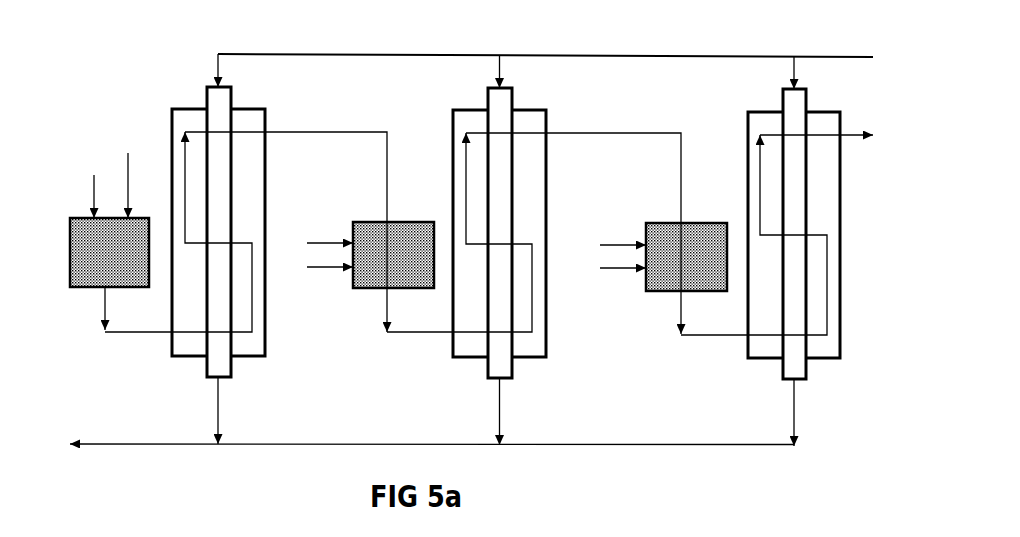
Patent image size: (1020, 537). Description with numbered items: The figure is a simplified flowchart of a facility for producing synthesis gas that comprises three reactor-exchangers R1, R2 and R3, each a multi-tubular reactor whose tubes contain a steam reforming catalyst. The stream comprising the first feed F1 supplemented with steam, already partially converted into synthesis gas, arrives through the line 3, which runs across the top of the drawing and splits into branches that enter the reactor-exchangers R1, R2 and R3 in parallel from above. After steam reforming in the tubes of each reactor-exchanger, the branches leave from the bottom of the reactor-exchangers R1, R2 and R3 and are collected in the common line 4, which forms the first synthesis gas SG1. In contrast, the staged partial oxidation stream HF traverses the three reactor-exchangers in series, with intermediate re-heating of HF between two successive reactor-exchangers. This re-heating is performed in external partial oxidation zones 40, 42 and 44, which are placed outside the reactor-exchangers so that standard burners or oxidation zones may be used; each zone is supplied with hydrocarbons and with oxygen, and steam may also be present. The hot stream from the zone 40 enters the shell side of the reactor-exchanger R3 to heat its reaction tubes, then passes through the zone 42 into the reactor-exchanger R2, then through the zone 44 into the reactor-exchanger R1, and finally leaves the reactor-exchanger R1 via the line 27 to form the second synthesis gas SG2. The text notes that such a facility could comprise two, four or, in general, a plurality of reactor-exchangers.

The line 3 is at (838, 57).
The line 4 is at (162, 443).
The line 27 is at (848, 133).
The external partial oxidation zone 40 is at (93, 265).
The external partial oxidation zone 42 is at (377, 243).
The external partial oxidation zone 44 is at (670, 245).
The reactor-exchanger R1 is at (736, 145).
The reactor-exchanger R2 is at (442, 132).
The reactor-exchanger R3 is at (148, 130).